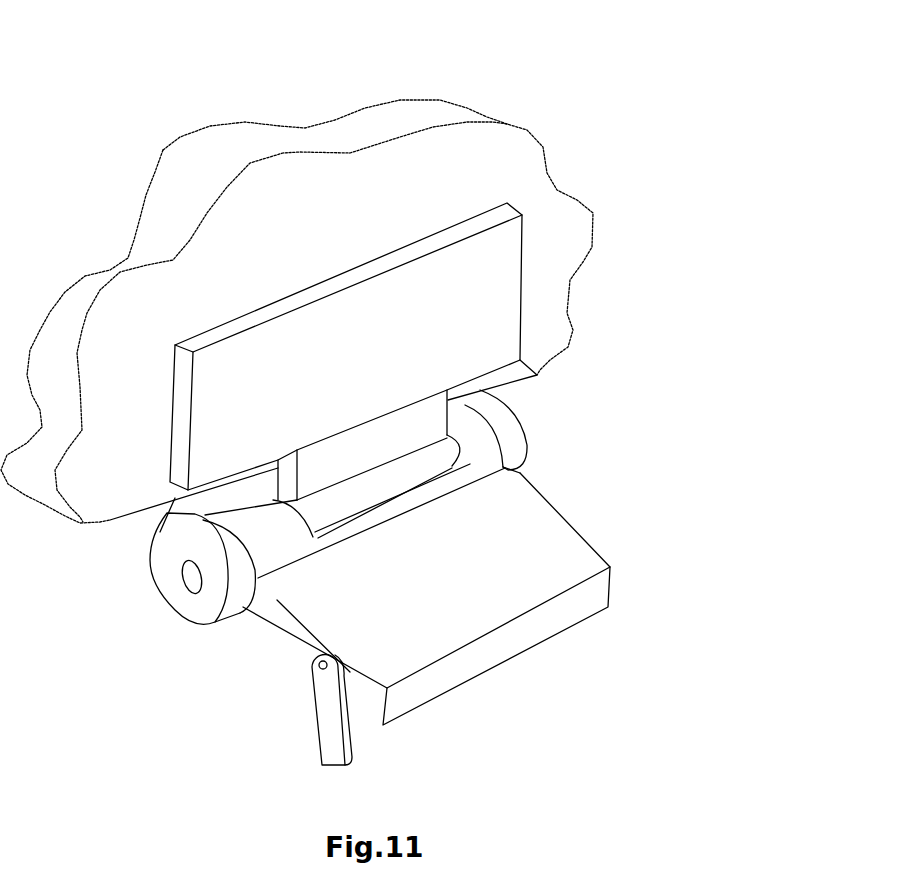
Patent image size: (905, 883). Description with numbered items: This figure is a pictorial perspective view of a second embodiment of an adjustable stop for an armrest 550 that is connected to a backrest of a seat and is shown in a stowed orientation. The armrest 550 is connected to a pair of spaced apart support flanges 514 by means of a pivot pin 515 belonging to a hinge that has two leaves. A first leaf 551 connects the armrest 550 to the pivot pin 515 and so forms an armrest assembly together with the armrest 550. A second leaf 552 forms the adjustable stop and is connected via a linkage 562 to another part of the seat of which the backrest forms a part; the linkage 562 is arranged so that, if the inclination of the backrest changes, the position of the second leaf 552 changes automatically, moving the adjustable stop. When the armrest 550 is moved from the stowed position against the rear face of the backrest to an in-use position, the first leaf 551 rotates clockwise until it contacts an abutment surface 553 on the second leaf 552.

The armrest 550 is at (161, 146).
The first leaf 551 is at (318, 284).
The abutment surface 553 is at (448, 458).
The support flanges 514 is at (527, 436).
The pivot pin 515 is at (183, 566).
The second leaf 552 is at (573, 522).
The linkage 562 is at (313, 727).